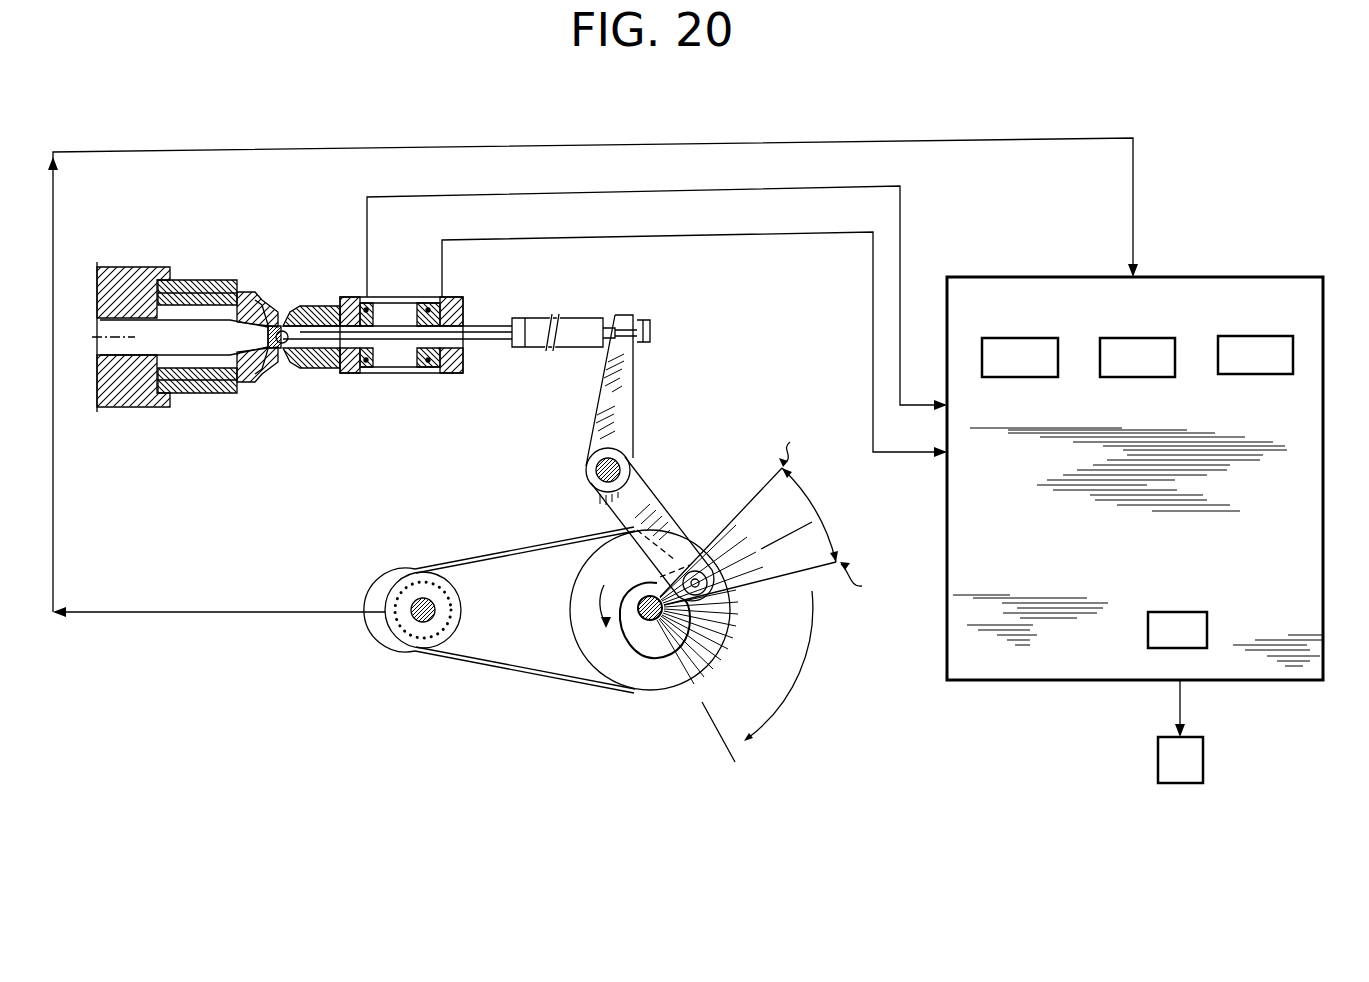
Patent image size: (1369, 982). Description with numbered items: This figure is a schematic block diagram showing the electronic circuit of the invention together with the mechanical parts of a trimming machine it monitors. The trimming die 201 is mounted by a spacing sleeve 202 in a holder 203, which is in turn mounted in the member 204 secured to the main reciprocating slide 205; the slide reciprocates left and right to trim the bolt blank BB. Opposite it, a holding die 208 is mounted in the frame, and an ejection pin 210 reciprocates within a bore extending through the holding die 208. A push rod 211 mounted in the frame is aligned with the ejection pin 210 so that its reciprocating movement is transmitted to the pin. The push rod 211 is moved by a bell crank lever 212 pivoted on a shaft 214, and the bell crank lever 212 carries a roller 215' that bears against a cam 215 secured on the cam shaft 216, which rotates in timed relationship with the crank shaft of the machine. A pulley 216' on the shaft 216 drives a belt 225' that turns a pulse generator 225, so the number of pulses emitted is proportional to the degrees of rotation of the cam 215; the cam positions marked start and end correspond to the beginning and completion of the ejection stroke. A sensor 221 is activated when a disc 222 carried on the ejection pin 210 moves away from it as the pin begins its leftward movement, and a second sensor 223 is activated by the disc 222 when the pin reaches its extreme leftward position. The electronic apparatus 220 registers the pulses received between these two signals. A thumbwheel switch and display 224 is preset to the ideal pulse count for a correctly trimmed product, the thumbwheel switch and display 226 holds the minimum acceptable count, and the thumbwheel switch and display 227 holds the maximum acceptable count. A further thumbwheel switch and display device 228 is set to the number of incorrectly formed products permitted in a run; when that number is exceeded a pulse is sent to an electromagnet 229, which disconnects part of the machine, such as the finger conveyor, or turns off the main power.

The trimming die 201 is at (270, 367).
The spacing sleeve 202 is at (163, 321).
The holder 203 is at (255, 290).
The member 204 is at (193, 278).
The main reciprocating slide 205 is at (130, 240).
The holding die 208 is at (313, 363).
The ejection pin 210 is at (487, 327).
The push rod 211 is at (577, 322).
The bell crank lever 212 is at (627, 390).
The shaft 214 is at (631, 457).
The cam 215 is at (770, 582).
The roller 215' is at (704, 546).
The shaft 216 is at (643, 606).
The pulley 216' is at (616, 610).
The electronic apparatus 220 is at (1229, 274).
The sensor 221 is at (448, 300).
The disc 222 is at (412, 316).
The second sensor 223 is at (362, 300).
The thumbwheel switch and display 224 is at (1142, 340).
The pulse generator 225 is at (400, 593).
The belt 225' is at (499, 622).
The thumbwheel switch and display mechanism 226 is at (1022, 340).
The thumbwheel switch and display 227 is at (1248, 338).
The thumbwheel switch and display device 228 is at (1186, 612).
The electromagnet 229 is at (1204, 759).
The bolt blank BB is at (313, 315).